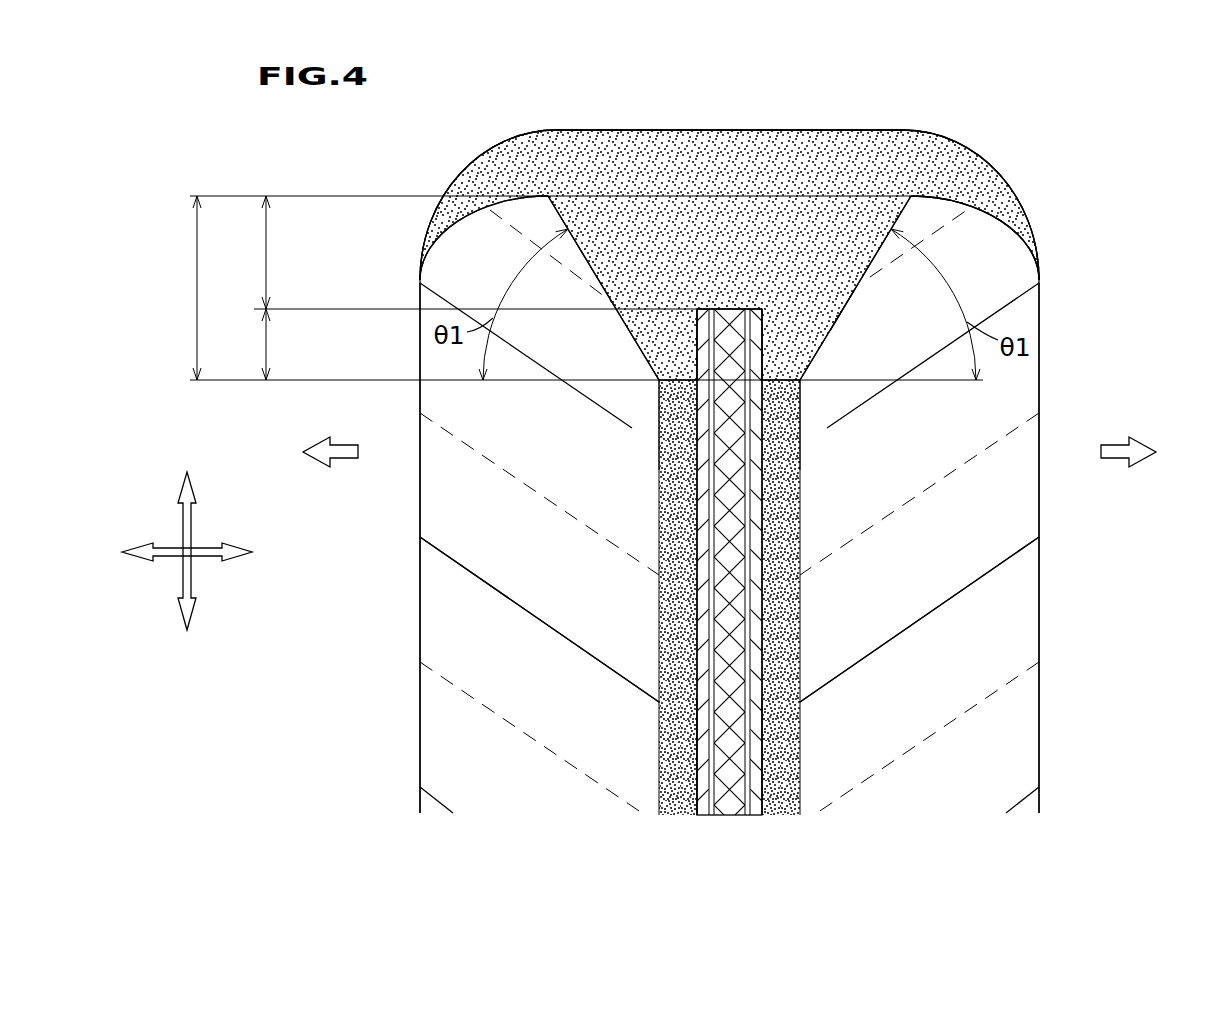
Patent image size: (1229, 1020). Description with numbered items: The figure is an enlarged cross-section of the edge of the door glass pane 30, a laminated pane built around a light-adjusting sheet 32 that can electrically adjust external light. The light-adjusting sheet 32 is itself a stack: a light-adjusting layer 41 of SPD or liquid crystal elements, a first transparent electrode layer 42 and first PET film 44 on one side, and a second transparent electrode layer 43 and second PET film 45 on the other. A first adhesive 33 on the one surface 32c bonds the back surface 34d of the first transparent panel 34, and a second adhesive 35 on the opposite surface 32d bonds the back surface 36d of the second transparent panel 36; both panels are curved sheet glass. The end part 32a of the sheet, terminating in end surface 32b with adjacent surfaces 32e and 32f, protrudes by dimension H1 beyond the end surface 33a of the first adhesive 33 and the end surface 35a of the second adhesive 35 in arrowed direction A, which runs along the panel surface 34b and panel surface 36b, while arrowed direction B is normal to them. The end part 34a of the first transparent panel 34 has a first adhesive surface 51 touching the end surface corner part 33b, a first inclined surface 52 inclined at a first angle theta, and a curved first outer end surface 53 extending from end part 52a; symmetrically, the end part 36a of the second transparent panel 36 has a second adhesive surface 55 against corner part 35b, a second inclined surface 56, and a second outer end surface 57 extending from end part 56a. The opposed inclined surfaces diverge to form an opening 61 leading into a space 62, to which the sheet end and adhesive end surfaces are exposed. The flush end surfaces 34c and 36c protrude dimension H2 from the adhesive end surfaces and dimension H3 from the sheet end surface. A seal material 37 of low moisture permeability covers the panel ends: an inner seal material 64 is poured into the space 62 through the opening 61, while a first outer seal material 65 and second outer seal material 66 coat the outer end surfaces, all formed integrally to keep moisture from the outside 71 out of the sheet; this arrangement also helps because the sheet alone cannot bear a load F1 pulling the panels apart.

The door glass pane 30 is at (1082, 175).
The outside 71 is at (627, 53).
The seal material 37 is at (714, 116).
The inner seal material 64 is at (744, 212).
The first outer seal material 65 is at (487, 176).
The second outer seal material 66 is at (970, 175).
The space 62 is at (724, 269).
The end surface of the first transparent panel 34c is at (533, 195).
The end surface of the second transparent panel 36c is at (925, 195).
The first outer end surface 53 is at (460, 218).
The second outer end surface 57 is at (998, 213).
The opening 61 is at (908, 195).
The end part of the first transparent panel 34a is at (487, 285).
The end part of the second transparent panel 36a is at (965, 278).
The first inclined surface 52 is at (603, 278).
The end part of the first inclined surface 52a is at (549, 196).
The second inclined surface 56 is at (858, 277).
The end part of the second inclined surface 56a is at (910, 198).
The first adhesive surface 51 is at (657, 390).
The second adhesive surface 55 is at (803, 387).
The light-adjusting sheet 32 is at (762, 523).
The end part of the light-adjusting sheet 32a is at (838, 320).
The end surface of the light-adjusting sheet 32b is at (750, 310).
The one surface of the light-adjusting sheet 32c is at (695, 727).
The opposite surface of the light-adjusting sheet 32d is at (762, 748).
The surface proximate to the end surface on the one surface 32e is at (695, 336).
The surface proximate to the end surface on the opposite surface 32f is at (765, 350).
The light-adjusting layer 41 is at (736, 560).
The first transparent electrode layer 42 is at (702, 772).
The second transparent electrode layer 43 is at (757, 795).
The first PET film 44 is at (700, 592).
The second PET film 45 is at (752, 650).
The first adhesive 33 is at (670, 553).
The end surface of the first adhesive 33a is at (680, 375).
The end surface corner part of the first adhesive 33b is at (658, 447).
The second adhesive 35 is at (783, 612).
The end surface of the second adhesive 35a is at (806, 378).
The end surface corner part of the second adhesive 35b is at (800, 447).
The first transparent panel 34 is at (443, 527).
The panel surface of the first transparent panel 34b is at (420, 588).
The back surface of the first transparent panel 34d is at (660, 676).
The second transparent panel 36 is at (1016, 527).
The panel surface of the second transparent panel 36b is at (1039, 588).
The back surface of the second transparent panel 36d is at (798, 722).
The protrusion dimension H1 is at (265, 343).
The protrusion dimension H2 is at (195, 290).
The protrusion dimension H3 is at (265, 250).
The load F1 is at (345, 445).
The arrowed direction A is at (181, 567).
The arrowed direction B is at (170, 546).